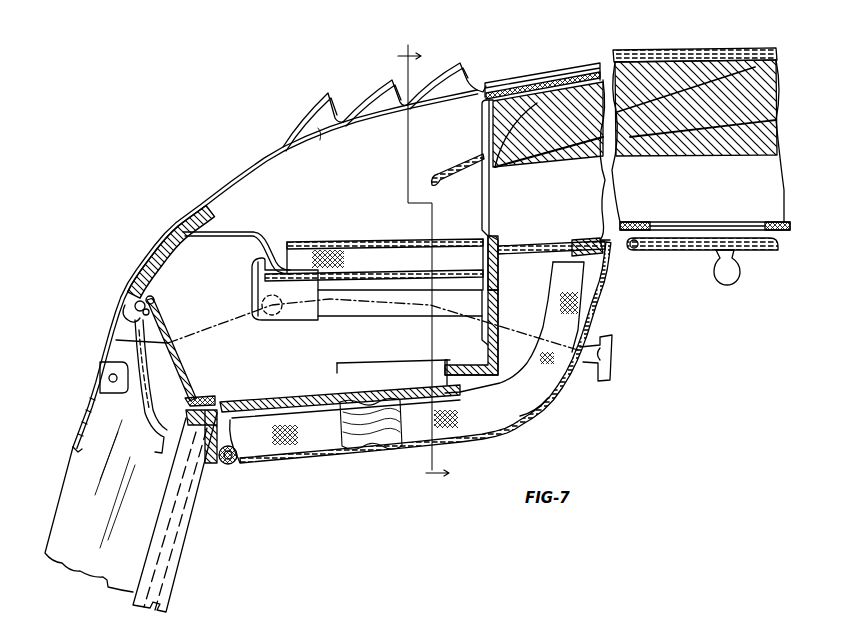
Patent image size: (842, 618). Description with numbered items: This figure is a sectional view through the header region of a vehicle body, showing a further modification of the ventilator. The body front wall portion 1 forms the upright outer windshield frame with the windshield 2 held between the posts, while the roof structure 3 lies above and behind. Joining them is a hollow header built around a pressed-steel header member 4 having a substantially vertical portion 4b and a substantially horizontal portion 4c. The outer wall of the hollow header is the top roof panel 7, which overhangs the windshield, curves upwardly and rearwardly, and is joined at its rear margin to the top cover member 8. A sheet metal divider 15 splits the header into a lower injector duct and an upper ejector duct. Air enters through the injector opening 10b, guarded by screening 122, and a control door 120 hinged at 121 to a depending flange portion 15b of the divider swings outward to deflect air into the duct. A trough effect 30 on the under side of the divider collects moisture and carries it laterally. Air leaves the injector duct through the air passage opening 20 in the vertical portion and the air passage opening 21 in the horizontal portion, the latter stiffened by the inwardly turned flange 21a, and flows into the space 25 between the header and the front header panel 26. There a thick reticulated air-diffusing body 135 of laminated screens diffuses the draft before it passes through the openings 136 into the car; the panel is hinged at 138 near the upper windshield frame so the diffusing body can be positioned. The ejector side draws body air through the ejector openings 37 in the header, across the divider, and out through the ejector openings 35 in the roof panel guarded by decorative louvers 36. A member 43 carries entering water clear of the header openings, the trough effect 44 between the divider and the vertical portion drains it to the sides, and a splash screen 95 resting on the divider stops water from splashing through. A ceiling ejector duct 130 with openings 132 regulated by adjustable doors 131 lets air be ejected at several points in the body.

The body front wall portion / side frame post 1 is at (62, 483).
The windshield 2 is at (175, 549).
The roof or top wall structure 3 is at (640, 58).
The header member 4 is at (488, 110).
The vertical portion of header member 4b is at (510, 248).
The horizontal portion of header member 4c is at (292, 396).
The outer header member (top roof panel) 7 is at (236, 178).
The top cover member 8 is at (430, 263).
The injector opening 10b is at (162, 411).
The divider 15 is at (250, 230).
The depending flange portion of divider 15b is at (168, 268).
The air passage opening 20 is at (483, 338).
The air passage opening 21 is at (392, 377).
The inwardly flanged metal 21a is at (360, 358).
The space 25 is at (514, 327).
The front header panel 26 is at (593, 301).
The trough effect 30 is at (266, 259).
The ejector openings 35 is at (322, 128).
The decorative louvers 36 is at (313, 105).
The ejector openings in header 37 is at (497, 200).
The water-carrying member 43 is at (481, 163).
The trough effect 44 is at (475, 240).
The splash screen 95 is at (362, 241).
The control doors or shutters 120 is at (95, 380).
The hinge 121 is at (152, 304).
The guarding screening 122 is at (180, 368).
The ejector duct 130 is at (698, 135).
The adjustable doors 131 is at (690, 252).
The openings in duct 132 is at (705, 226).
The reticulated air-diffusing body 135 is at (540, 380).
The openings in front header panel 136 is at (515, 438).
The hinge 138 is at (230, 465).